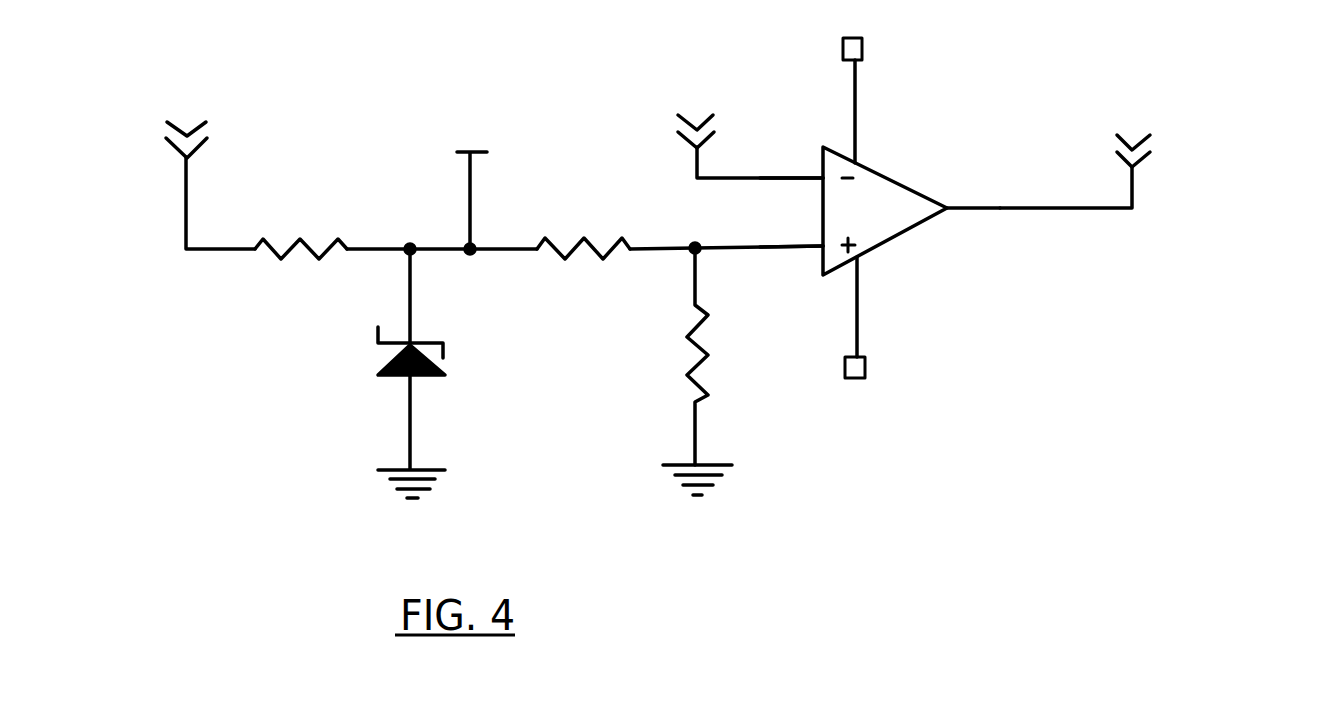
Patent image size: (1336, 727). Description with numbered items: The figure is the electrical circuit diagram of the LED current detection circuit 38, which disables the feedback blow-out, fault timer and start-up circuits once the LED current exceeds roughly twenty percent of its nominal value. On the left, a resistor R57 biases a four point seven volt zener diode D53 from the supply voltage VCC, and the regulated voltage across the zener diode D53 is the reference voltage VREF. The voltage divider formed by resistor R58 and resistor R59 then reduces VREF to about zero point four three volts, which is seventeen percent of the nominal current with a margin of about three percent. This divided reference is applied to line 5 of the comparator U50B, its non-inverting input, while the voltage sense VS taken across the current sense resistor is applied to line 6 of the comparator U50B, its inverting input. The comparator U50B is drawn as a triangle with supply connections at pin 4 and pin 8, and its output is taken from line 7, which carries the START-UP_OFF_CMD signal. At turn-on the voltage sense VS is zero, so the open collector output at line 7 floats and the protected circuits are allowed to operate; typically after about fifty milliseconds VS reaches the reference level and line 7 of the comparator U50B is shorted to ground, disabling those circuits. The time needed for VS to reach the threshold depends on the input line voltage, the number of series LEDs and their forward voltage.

The LED current detection circuit 38 is at (225, 420).
The resistor R57 is at (301, 206).
The voltage divider resistor R58 is at (582, 205).
The voltage divider resistor R59 is at (721, 371).
The zener diode D53 is at (349, 373).
The comparator U50B is at (907, 208).
The comparator pin 4 is at (842, 100).
The line 5 of comparator 5 is at (791, 229).
The line 6 of comparator 6 is at (791, 162).
The line 7 of comparator 7 is at (973, 193).
The comparator pin 8 is at (844, 317).